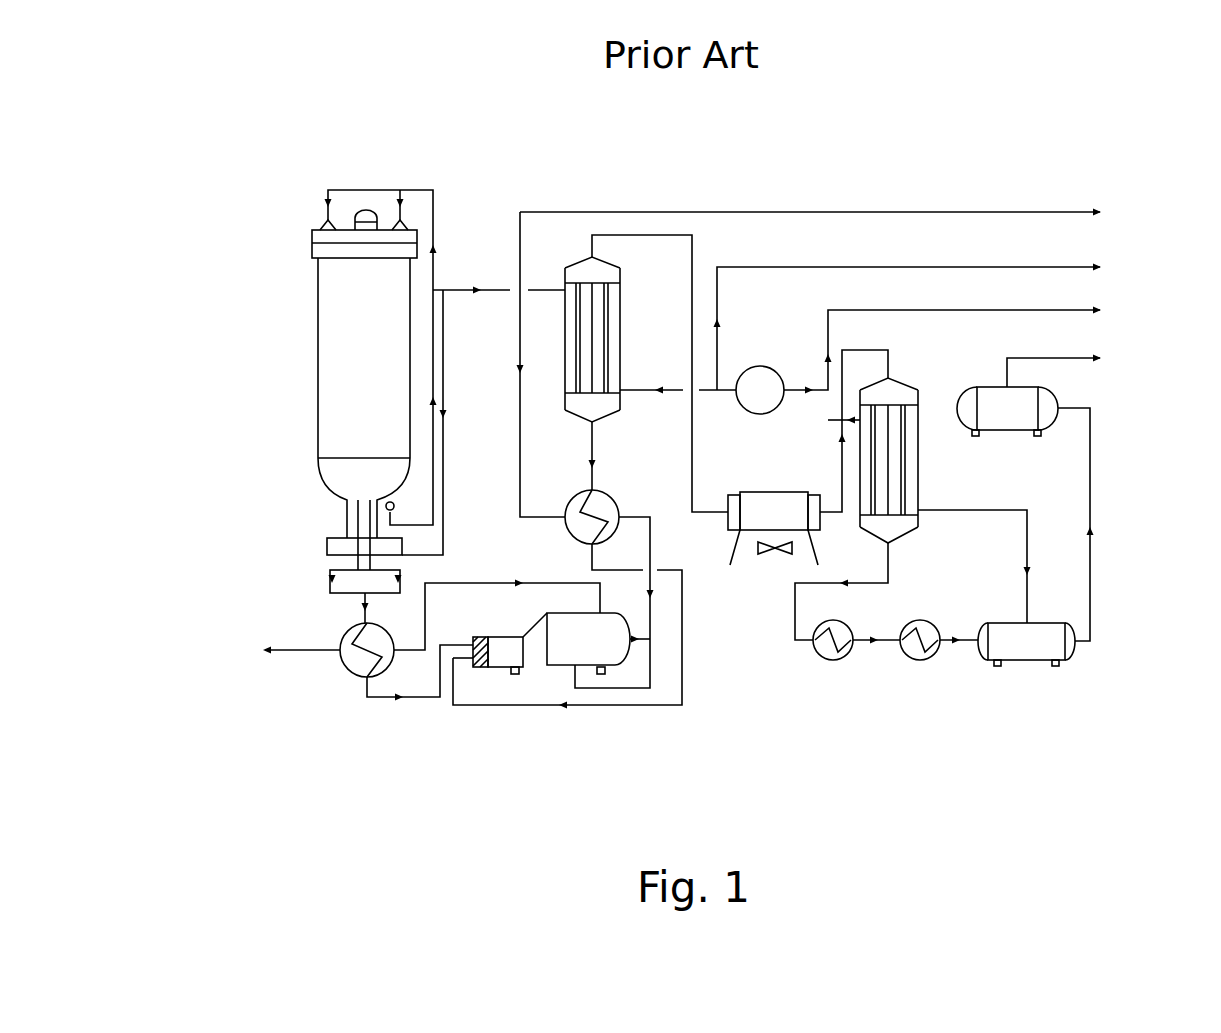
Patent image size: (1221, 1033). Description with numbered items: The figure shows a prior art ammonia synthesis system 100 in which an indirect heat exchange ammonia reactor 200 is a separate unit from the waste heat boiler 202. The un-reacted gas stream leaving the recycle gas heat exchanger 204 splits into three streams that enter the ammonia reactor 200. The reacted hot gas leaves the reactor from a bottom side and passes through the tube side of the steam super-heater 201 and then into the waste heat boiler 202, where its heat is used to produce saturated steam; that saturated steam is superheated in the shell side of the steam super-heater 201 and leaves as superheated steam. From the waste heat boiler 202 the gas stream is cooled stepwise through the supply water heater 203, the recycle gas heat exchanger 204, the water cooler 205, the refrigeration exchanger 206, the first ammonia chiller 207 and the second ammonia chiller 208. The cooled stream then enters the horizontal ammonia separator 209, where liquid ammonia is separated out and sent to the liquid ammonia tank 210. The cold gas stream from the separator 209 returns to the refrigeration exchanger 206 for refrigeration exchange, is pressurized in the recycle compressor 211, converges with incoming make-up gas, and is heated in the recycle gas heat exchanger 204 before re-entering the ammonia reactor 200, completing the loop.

The prior art ammonia/hydrogen production system 100 is at (337, 82).
The ammonia reactor 200 is at (335, 350).
The steam super-heater 201 is at (352, 672).
The waste heat boiler 202 is at (588, 640).
The supply water heater 203 is at (607, 528).
The recycle gas heat exchanger 204 is at (575, 310).
The water cooler 205 is at (732, 493).
The refrigeration exchanger 206 is at (887, 377).
The first ammonia chiller 207 is at (833, 660).
The second ammonia chiller 208 is at (922, 660).
The horizontal ammonia separator 209 is at (1030, 650).
The liquid ammonia tank 210 is at (1047, 410).
The recycle compressor 211 is at (762, 368).